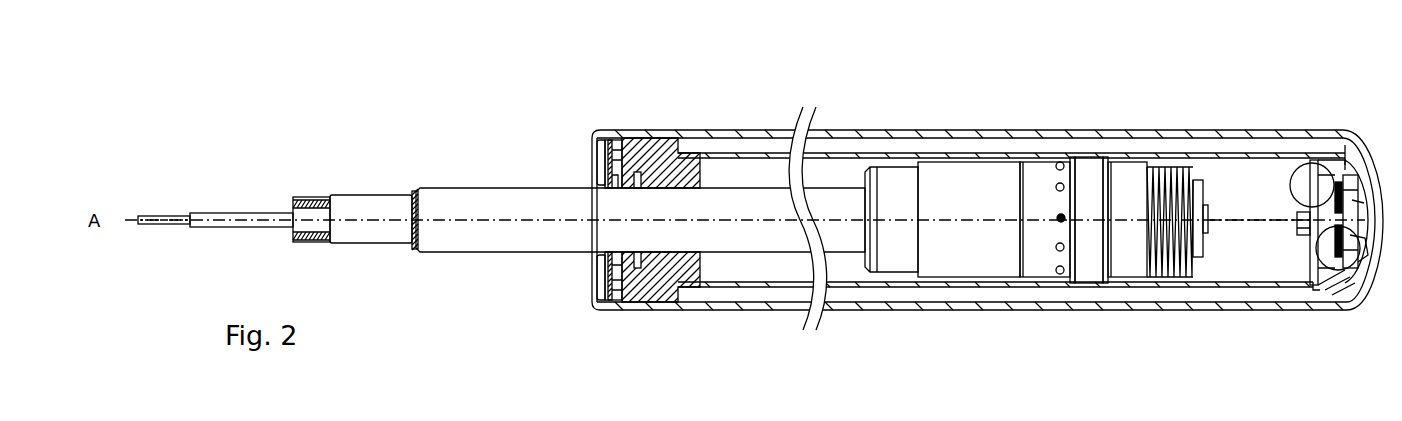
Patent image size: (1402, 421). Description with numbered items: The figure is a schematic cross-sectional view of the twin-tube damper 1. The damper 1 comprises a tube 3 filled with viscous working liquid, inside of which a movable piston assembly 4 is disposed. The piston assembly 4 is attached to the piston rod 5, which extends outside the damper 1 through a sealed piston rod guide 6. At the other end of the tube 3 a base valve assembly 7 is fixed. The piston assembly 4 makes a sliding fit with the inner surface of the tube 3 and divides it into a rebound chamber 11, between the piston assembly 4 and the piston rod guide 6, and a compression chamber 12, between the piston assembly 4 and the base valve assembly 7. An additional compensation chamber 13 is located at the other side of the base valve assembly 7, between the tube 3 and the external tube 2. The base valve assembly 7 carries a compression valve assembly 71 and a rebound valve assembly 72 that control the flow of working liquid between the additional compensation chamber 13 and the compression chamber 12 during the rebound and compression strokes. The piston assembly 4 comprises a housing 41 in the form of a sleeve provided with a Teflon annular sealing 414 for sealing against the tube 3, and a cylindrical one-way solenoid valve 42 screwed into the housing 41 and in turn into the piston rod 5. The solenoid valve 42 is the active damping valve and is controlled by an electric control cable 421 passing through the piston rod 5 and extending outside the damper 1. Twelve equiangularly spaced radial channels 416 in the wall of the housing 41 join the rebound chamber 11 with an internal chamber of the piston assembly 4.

The damper 1 is at (964, 181).
The external tube 2 is at (703, 130).
The tube 3 is at (755, 153).
The piston assembly 4 is at (1006, 168).
The piston rod 5 is at (661, 203).
The piston rod guide 6 is at (622, 145).
The base valve assembly 7 is at (1323, 174).
The rebound chamber 11 is at (846, 175).
The compression chamber 12 is at (1228, 183).
The additional compensation chamber 13 is at (1259, 145).
The housing 41 is at (950, 190).
The solenoid valve 42 is at (898, 188).
The compression valve assembly 71 is at (1367, 170).
The rebound valve assembly 72 is at (1289, 165).
The Teflon annular sealing 414 is at (1090, 175).
The radial channels 416 is at (1061, 214).
The electric control cable 421 is at (270, 213).